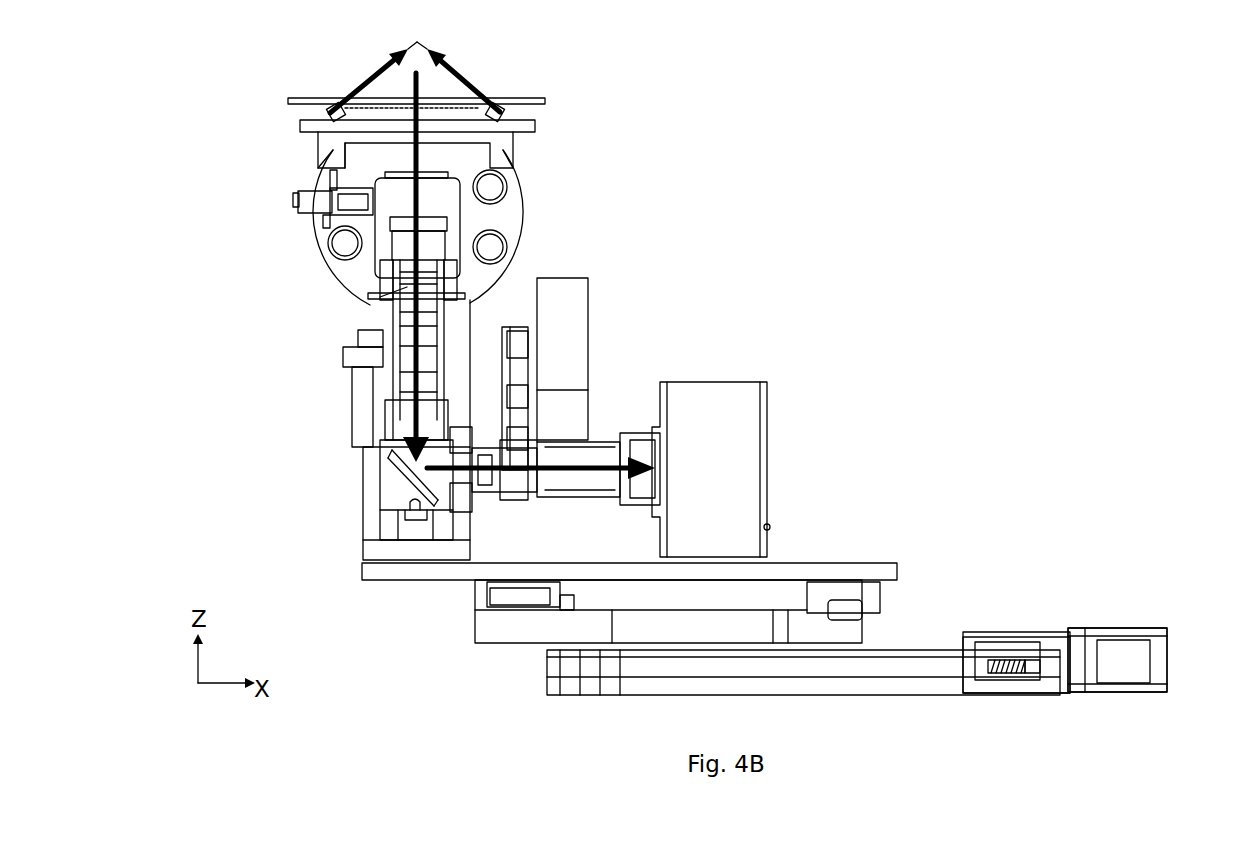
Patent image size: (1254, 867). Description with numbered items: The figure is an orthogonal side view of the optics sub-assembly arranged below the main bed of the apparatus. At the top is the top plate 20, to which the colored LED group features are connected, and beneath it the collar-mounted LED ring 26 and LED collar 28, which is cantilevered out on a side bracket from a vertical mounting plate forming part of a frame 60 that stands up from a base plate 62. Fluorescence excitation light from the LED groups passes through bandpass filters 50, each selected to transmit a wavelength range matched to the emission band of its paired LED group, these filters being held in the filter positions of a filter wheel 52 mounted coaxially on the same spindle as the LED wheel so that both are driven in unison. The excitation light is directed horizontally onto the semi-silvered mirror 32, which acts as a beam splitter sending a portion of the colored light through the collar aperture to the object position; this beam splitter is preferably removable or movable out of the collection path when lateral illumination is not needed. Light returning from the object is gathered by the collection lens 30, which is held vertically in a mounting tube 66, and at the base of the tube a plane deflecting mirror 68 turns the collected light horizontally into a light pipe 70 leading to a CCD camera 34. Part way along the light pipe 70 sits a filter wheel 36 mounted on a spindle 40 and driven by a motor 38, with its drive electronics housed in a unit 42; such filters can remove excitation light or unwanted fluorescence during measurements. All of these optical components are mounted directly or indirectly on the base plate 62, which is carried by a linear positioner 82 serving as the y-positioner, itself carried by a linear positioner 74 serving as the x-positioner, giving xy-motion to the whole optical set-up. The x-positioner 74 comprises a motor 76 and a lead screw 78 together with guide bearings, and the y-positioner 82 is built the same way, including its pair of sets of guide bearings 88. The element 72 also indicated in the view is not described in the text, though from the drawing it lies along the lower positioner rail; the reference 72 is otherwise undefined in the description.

The top plate 20 is at (547, 102).
The LED ring 26 is at (333, 105).
The LED collar 28 is at (490, 118).
The collection lens 30 is at (368, 317).
The semi-silvered mirror 32 is at (367, 190).
The CCD camera 34 is at (718, 380).
The filter wheel 36 is at (520, 326).
The motor 38 is at (585, 417).
The spindle 40 is at (497, 417).
The unit 42 is at (585, 305).
The bandpass filter 50 is at (520, 193).
The filter wheel 52 is at (527, 220).
The frame 60 is at (310, 565).
The base plate 62 is at (800, 570).
The mounting tube 66 is at (360, 277).
The plane deflecting mirror 68 is at (397, 467).
The light pipe 70 is at (603, 442).
The linear rail 72 is at (1020, 598).
The linear positioner 74 is at (1190, 660).
The motor 76 is at (1120, 693).
The lead screw 78 is at (1003, 677).
The linear positioner 82 is at (450, 622).
The guide bearings 88 is at (850, 585).